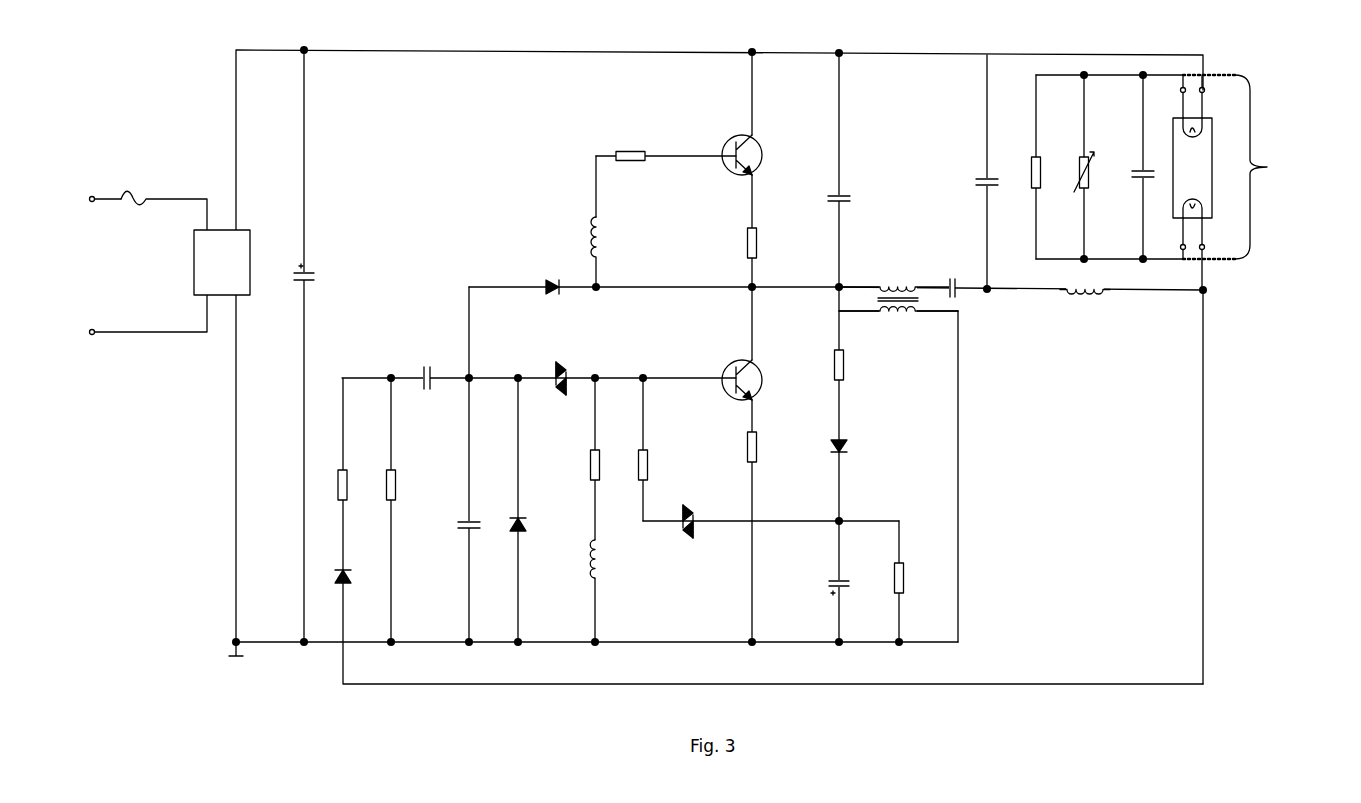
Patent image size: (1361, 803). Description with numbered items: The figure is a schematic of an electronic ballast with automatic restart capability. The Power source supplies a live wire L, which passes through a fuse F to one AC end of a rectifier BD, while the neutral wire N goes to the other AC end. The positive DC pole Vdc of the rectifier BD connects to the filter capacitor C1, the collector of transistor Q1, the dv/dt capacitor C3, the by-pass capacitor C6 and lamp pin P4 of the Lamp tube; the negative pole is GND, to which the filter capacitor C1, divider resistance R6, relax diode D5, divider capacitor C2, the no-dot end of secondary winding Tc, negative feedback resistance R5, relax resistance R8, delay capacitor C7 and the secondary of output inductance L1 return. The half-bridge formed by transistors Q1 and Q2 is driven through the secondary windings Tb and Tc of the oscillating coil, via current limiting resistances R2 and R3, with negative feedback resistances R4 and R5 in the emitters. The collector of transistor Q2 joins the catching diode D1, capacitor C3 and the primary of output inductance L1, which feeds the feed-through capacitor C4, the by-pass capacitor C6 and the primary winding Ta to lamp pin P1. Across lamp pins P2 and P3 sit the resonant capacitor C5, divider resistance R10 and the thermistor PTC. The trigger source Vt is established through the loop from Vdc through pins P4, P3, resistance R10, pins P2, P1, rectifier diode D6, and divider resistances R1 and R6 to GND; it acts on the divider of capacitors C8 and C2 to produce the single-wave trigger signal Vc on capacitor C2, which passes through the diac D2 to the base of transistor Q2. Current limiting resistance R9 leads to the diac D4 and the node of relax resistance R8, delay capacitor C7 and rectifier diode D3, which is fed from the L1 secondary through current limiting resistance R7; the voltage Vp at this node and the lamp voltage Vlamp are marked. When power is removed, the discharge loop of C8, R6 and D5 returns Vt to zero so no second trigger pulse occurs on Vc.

The positive pole of DC end of rectifier Vdc is at (298, 45).
The ground GND is at (231, 636).
The trigger source Vt is at (342, 376).
The single-wave trigger signal Vc is at (468, 376).
The sensed voltage node Vp is at (821, 544).
The lamp voltage Vlamp is at (1300, 174).
The live wire L is at (97, 201).
The neutral wire N is at (140, 319).
The power source Power is at (102, 277).
The fuse F is at (164, 202).
The rectifier BD is at (234, 267).
The filter capacitor C1 is at (320, 279).
The divider resistance R1 is at (355, 485).
The divider resistance R6 is at (404, 485).
The rectifier diode D6 is at (355, 572).
The divider capacitor C8 is at (433, 366).
The divider capacitor C2 is at (478, 514).
The relax diode D5 is at (531, 520).
The catching diode D1 is at (549, 275).
The diac D2 is at (545, 373).
The current limiting resistance R3 is at (608, 465).
The current limiting resistance R9 is at (657, 465).
The secondary side winding of oscillating coil Tc is at (606, 556).
The secondary side winding of oscillating coil Tb is at (609, 221).
The current limiting resistance R2 is at (631, 143).
The transistor Q1 is at (735, 149).
The transistor Q2 is at (735, 372).
The negative feedback resistance R4 is at (739, 243).
The negative feedback resistance R5 is at (738, 447).
The dv/dt capacitor C3 is at (851, 200).
The diac D4 is at (702, 514).
The output inductance L1 is at (898, 286).
The feed-through capacitor C4 is at (957, 278).
The current limiting resistance R7 is at (855, 365).
The rectifier diode D3 is at (857, 449).
The delay capacitor C7 is at (849, 572).
The relax resistance R8 is at (915, 578).
The by-pass capacitor C6 is at (1002, 185).
The divider resistance R10 is at (1054, 172).
The thermistor PTC is at (1099, 163).
The resonant capacitor C5 is at (1133, 176).
The primary side winding of oscillating coil Ta is at (1086, 280).
The lamp tube pin P1 is at (1216, 254).
The lamp tube pin P2 is at (1171, 238).
The lamp tube pin P3 is at (1171, 96).
The lamp tube pin P4 is at (1216, 96).
The lamp tube Lamp is at (1192, 168).